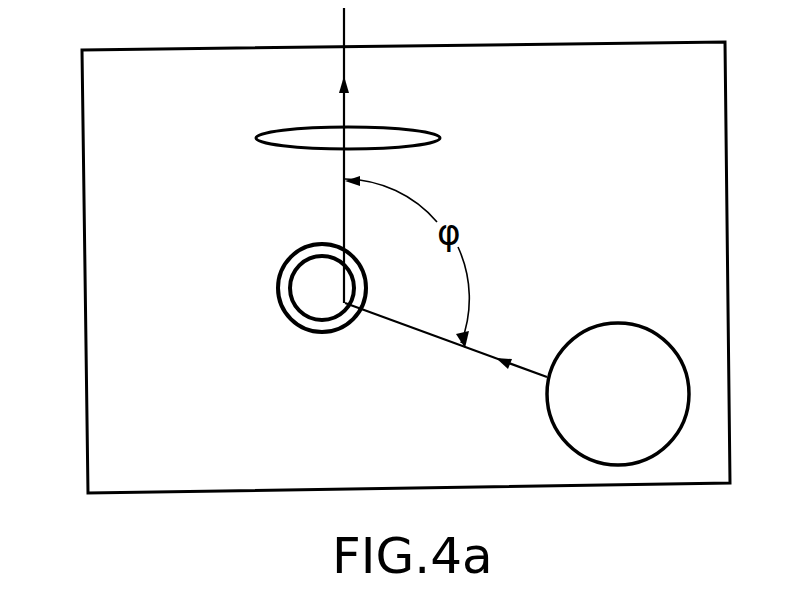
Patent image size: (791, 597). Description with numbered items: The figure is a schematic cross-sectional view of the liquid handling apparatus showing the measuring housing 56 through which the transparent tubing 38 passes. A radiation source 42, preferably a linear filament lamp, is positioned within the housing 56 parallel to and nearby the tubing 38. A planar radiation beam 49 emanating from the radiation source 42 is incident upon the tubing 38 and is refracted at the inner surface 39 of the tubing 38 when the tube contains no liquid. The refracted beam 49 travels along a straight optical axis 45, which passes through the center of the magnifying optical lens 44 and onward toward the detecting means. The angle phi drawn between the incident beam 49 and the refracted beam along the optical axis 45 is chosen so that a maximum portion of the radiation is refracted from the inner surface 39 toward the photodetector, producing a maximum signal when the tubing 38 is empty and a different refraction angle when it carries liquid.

The tubing 38 is at (300, 326).
The inner surface of the tubing 39 is at (298, 296).
The radiation source 42 is at (620, 323).
The optical lens 44 is at (384, 128).
The optical axis 45 is at (344, 22).
The radiation beam 49 is at (344, 106).
The measuring housing 56 is at (155, 203).